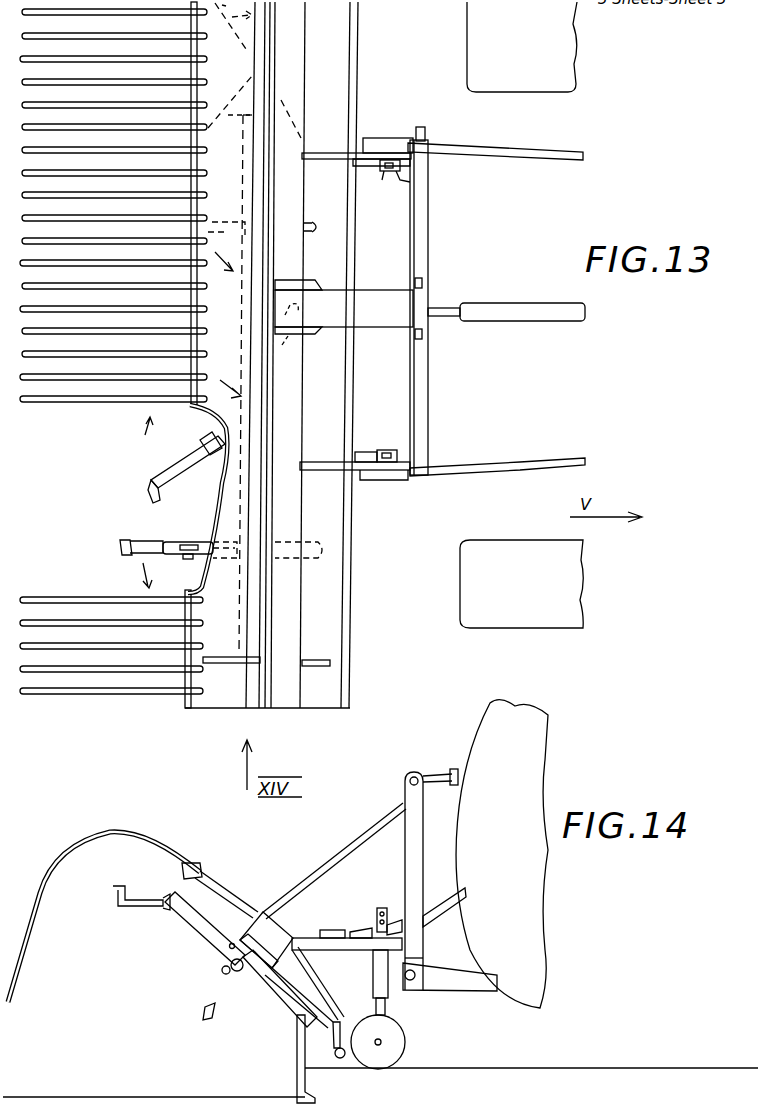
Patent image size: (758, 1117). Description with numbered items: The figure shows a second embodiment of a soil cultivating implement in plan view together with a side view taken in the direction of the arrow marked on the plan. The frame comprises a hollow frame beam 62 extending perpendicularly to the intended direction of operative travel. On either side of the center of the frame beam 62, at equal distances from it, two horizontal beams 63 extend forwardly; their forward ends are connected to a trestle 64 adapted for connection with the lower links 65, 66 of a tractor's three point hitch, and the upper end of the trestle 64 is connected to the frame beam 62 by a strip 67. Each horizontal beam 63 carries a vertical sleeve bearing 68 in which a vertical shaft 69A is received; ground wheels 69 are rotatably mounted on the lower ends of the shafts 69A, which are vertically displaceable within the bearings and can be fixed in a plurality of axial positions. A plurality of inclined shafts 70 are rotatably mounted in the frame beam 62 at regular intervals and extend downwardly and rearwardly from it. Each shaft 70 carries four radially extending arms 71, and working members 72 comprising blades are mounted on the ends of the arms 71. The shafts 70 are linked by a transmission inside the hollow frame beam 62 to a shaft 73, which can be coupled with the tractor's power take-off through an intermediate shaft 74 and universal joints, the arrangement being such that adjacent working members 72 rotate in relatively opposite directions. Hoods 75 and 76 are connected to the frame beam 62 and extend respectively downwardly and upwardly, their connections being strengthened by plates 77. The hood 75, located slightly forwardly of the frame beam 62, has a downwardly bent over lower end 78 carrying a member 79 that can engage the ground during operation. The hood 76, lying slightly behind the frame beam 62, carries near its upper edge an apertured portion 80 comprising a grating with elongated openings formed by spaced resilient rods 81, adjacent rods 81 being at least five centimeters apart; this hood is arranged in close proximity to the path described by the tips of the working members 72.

In FIG. 13, the frame beam 62 is at (280, 708).
In FIG. 14, the frame beam 62 is at (263, 912).
In FIG. 13, the horizontal beams 63 is at (312, 160).
In FIG. 14, the horizontal beams 63 is at (318, 950).
In FIG. 13, the trestle 64 is at (441, 234).
In FIG. 14, the trestle 64 is at (403, 783).
In FIG. 13, the lower link 65 is at (538, 160).
In FIG. 14, the lower link 65 is at (480, 978).
In FIG. 13, the lower link 66 is at (538, 322).
In FIG. 14, the lower link 66 is at (458, 765).
In FIG. 13, the strip 67 is at (372, 328).
In FIG. 14, the strip 67 is at (350, 848).
In FIG. 13, the vertical sleeve bearing 68 is at (384, 172).
In FIG. 14, the vertical sleeve bearing 68 is at (390, 996).
In FIG. 13, the ground wheels 69 is at (393, 140).
In FIG. 14, the ground wheels 69 is at (408, 1058).
In FIG. 14, the vertical shaft 69A is at (382, 908).
In FIG. 14, the inclined shafts 70 is at (224, 968).
In FIG. 13, the arms 71 is at (212, 438).
In FIG. 14, the arms 71 is at (196, 936).
In FIG. 13, the working members 72 is at (162, 468).
In FIG. 14, the working members 72 is at (135, 906).
In FIG. 14, the shaft 73 is at (322, 930).
In FIG. 14, the intermediate shaft 74 is at (448, 898).
In FIG. 13, the hood 75 is at (348, 578).
In FIG. 14, the hood 75 is at (334, 1018).
In FIG. 13, the hood 76 is at (222, 710).
In FIG. 14, the hood 76 is at (186, 872).
In FIG. 13, the plates 77 is at (320, 660).
In FIG. 14, the plates 77 is at (220, 888).
In FIG. 14, the bent over lower end 78 is at (342, 1032).
In FIG. 13, the member 79 is at (350, 643).
In FIG. 14, the member 79 is at (346, 1060).
In FIG. 13, the apertured portion 80 is at (118, 697).
In FIG. 14, the apertured portion 80 is at (127, 822).
In FIG. 13, the resilient rods 81 is at (75, 372).
In FIG. 14, the resilient rods 81 is at (22, 978).